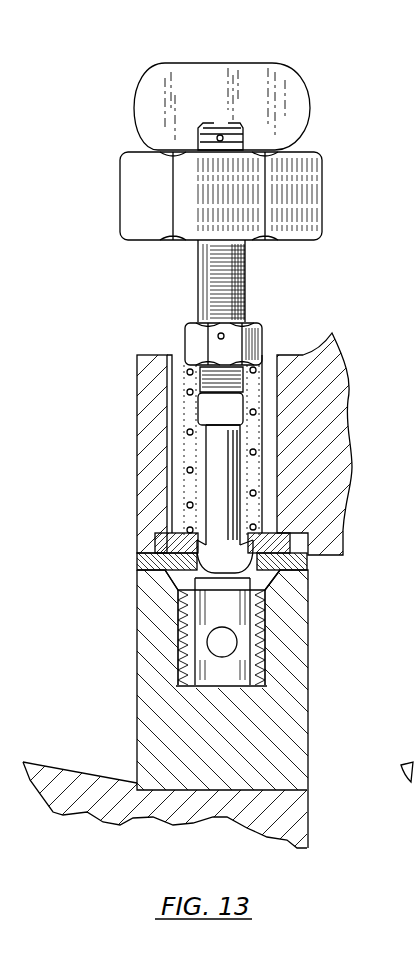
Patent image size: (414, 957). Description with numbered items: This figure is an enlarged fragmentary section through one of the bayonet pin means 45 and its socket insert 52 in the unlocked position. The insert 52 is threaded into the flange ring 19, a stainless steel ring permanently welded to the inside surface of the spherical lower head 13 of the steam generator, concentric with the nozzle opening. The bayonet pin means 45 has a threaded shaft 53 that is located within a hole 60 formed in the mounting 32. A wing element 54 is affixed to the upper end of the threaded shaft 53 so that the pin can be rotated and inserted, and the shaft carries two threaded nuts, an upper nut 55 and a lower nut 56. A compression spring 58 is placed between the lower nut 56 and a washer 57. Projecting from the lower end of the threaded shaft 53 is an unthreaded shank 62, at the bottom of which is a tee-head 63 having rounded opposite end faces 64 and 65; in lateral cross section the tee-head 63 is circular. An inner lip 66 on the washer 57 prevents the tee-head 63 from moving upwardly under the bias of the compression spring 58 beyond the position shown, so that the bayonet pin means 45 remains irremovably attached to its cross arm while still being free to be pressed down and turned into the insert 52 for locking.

The spherical lower head 13 is at (102, 780).
The flange ring 19 is at (310, 705).
The mounting 32 is at (135, 382).
The bayonet pin means 45 is at (328, 106).
The insert 52 is at (180, 640).
The threaded shaft 53 is at (240, 287).
The wing element 54 is at (233, 62).
The upper nut 55 is at (308, 195).
The lower nut 56 is at (267, 337).
The washer 57 is at (157, 538).
The compression spring 58 is at (187, 507).
The hole 60 is at (172, 378).
The unthreaded shank 62 is at (213, 462).
The tee-head 63 is at (200, 583).
The rounded end face 64 is at (180, 557).
The rounded end face 65 is at (300, 580).
The inner lip 66 is at (303, 518).